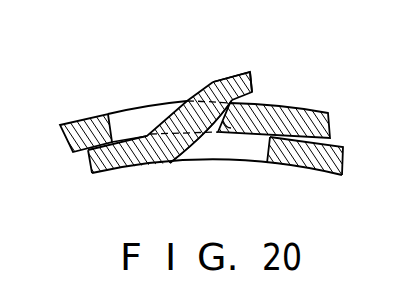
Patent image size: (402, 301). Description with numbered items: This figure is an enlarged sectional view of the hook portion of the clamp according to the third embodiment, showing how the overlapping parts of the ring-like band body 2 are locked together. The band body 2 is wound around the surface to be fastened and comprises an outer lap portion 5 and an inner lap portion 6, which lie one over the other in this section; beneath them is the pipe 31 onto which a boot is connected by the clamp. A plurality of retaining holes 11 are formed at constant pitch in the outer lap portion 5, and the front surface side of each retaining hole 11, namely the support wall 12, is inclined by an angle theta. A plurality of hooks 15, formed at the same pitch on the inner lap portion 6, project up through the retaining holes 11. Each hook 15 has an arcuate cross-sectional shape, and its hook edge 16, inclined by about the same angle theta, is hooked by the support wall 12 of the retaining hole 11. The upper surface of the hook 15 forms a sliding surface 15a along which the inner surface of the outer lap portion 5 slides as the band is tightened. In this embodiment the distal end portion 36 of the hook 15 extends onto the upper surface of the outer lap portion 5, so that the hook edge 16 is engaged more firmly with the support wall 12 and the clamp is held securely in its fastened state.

The band body 2 is at (64, 134).
The retaining hole 11 is at (130, 120).
The hook 15 is at (188, 104).
The support wall 12 is at (212, 80).
The sliding surface 15a is at (249, 77).
The distal end portion 36 is at (254, 81).
The outer lap portion 5 is at (309, 117).
The pipe 31 is at (200, 139).
The hook edge 16 is at (227, 140).
The inner lap portion 6 is at (307, 163).